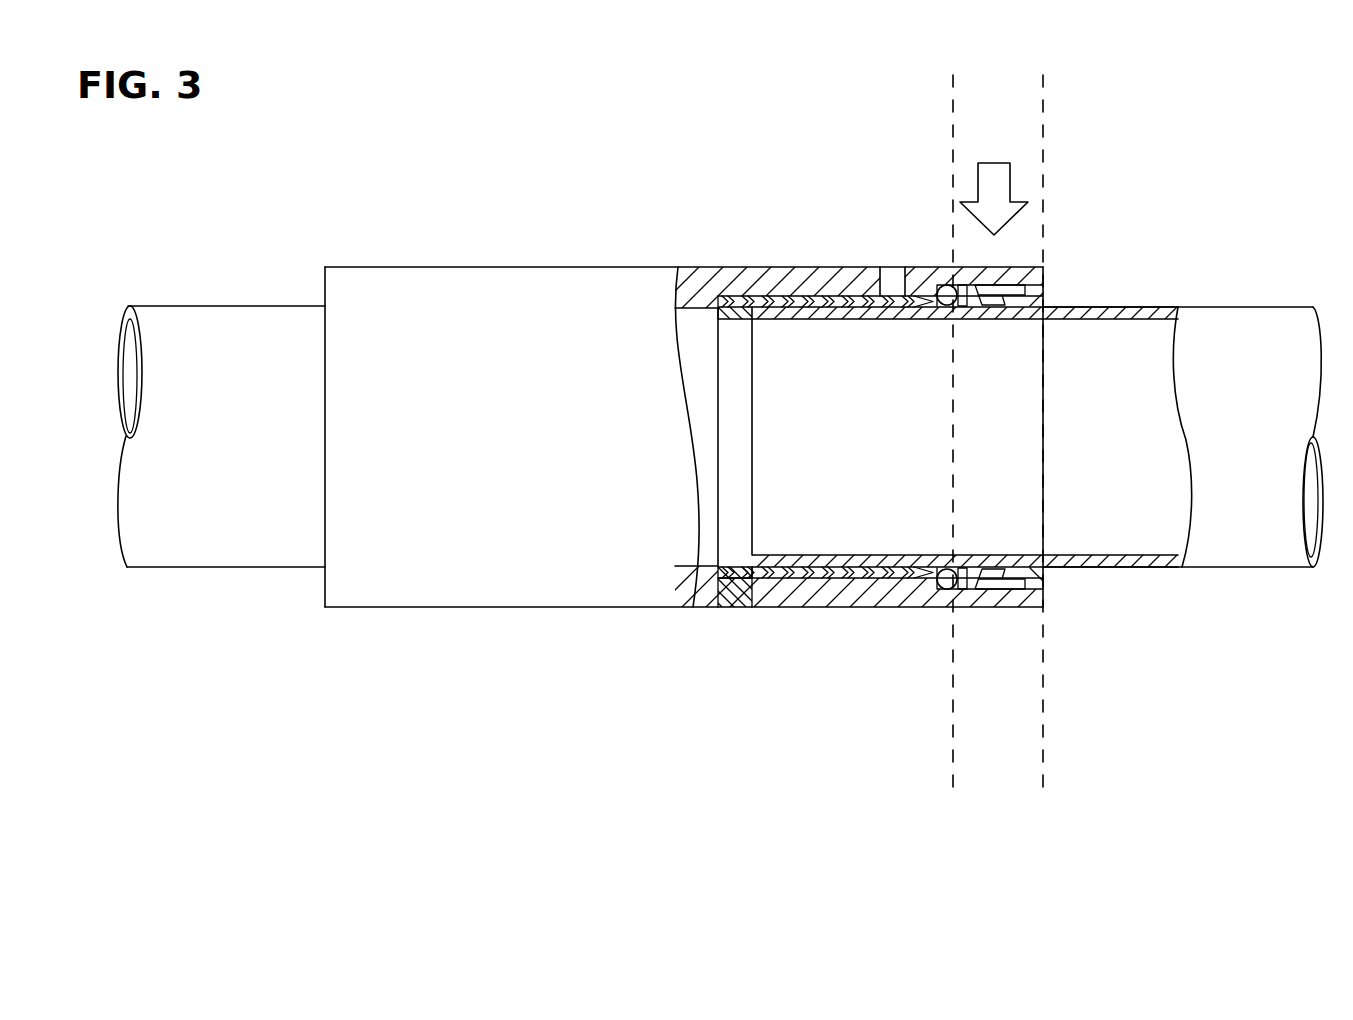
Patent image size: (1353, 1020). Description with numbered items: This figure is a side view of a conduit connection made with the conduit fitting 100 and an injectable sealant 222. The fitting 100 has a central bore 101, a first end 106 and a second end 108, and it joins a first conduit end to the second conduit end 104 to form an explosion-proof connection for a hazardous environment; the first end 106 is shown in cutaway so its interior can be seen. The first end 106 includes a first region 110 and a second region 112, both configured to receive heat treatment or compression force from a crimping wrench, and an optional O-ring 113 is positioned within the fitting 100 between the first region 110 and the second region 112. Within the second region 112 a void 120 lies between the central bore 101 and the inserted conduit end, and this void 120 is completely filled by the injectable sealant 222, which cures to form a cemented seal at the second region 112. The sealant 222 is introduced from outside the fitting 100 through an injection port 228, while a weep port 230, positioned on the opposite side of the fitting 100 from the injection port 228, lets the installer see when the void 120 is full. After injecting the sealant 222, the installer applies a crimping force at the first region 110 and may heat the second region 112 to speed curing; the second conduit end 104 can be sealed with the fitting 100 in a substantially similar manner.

The conduit fitting 100 is at (412, 246).
The central bore 101 is at (697, 300).
The second conduit end 104 is at (226, 338).
The first end 106 is at (783, 592).
The second end 108 is at (372, 497).
The first region 110 is at (1003, 124).
The second region 112 is at (790, 244).
The O-ring 113 is at (947, 579).
The void 120 is at (735, 567).
The injectable sealant 222 is at (736, 303).
The injection port 228 is at (893, 278).
The weep port 230 is at (738, 588).